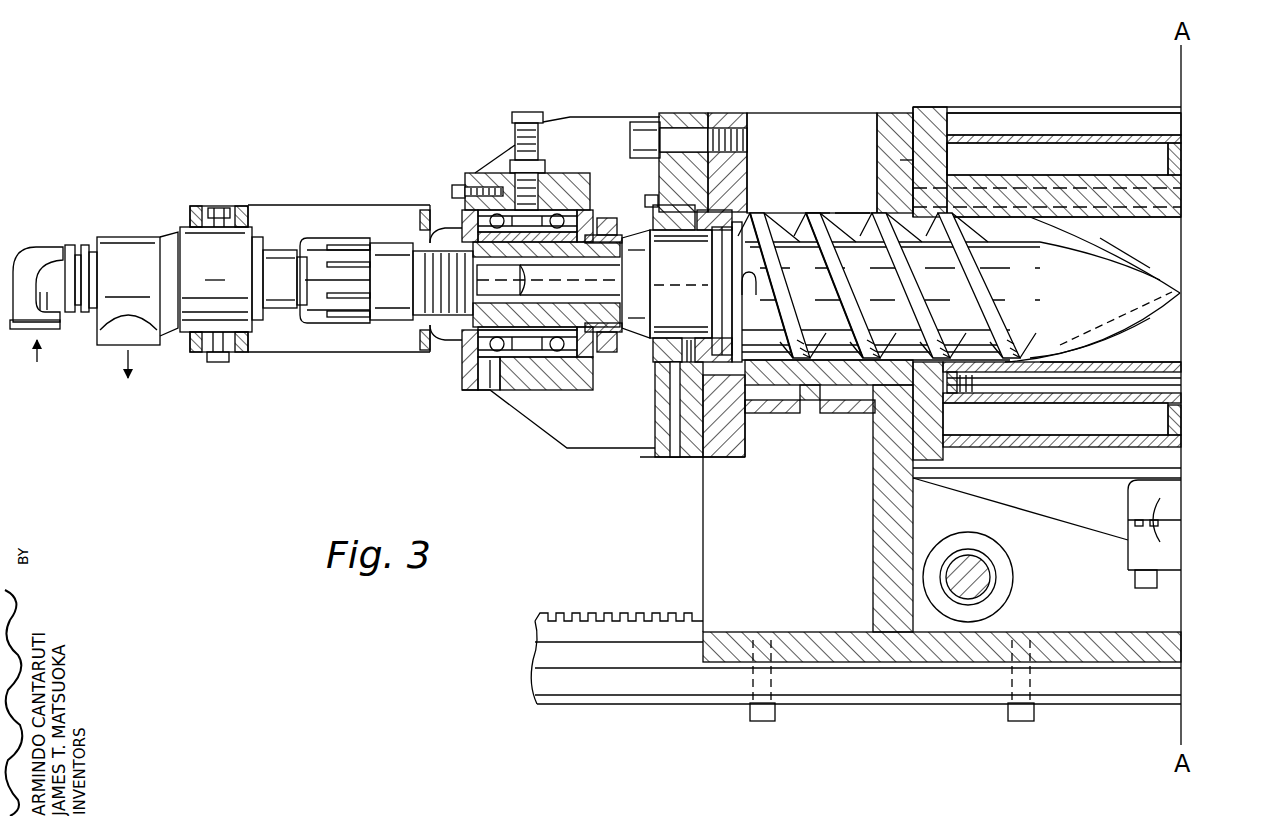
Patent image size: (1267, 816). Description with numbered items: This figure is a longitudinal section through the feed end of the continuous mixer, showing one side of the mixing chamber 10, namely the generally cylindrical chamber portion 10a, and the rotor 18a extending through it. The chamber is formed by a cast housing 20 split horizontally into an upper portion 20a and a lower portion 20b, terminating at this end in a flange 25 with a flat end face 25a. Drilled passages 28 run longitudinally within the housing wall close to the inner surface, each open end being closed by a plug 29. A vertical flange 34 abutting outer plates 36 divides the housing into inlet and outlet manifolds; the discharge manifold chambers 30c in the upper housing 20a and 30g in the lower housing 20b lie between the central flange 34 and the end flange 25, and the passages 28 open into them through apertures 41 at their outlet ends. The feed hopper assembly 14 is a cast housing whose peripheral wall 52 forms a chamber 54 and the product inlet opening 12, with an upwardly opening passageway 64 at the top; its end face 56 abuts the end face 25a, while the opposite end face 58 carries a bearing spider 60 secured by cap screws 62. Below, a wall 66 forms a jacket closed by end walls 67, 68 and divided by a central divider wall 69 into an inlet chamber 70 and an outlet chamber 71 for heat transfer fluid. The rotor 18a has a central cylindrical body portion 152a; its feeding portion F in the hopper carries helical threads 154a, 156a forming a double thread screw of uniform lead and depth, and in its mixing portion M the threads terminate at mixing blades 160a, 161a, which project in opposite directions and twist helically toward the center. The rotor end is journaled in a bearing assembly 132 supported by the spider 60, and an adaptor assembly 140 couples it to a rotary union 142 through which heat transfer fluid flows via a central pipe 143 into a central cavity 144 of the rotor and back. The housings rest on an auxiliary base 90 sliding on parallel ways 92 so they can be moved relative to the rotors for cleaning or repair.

The mixing chamber 10 is at (1163, 352).
The chamber portion 10a is at (1173, 230).
The product inlet opening 12 is at (843, 110).
The feed hopper housing 14 is at (740, 113).
The rotor 18a is at (1170, 248).
The cast housing 20 is at (1082, 165).
The upper housing portion 20a is at (1181, 180).
The lower housing portion 20b is at (1181, 396).
The end flange 25 is at (933, 125).
The flat end face 25a is at (912, 150).
The drilled passage 28 is at (1181, 203).
The plug 29 is at (948, 400).
The discharge manifold chamber 30c is at (1034, 168).
The discharge manifold chamber 30g is at (1080, 437).
The vertical flange 34 is at (1181, 160).
The outer plate 36 is at (1181, 138).
The aperture 41 is at (980, 400).
The peripheral wall 52 is at (828, 386).
The hopper chamber 54 is at (848, 215).
The end face 56 is at (905, 165).
The end face 58 is at (700, 113).
The bearing spider 60 is at (573, 128).
The cap screw 62 is at (643, 128).
The upwardly opening passageway 64 is at (878, 130).
The jacket wall 66 is at (785, 420).
The end wall 67 is at (732, 462).
The end wall 68 is at (873, 492).
The central divider wall 69 is at (812, 402).
The inlet chamber 70 is at (850, 402).
The outlet chamber 71 is at (767, 402).
The auxiliary base 90 is at (872, 662).
The ways 92 is at (662, 697).
The bearing assembly 132 is at (488, 170).
The adaptor assembly 140 is at (388, 230).
The rotary union 142 is at (137, 235).
The central pipe 143 is at (503, 277).
The central cavity 144 is at (520, 293).
The central body portion 152a is at (1171, 322).
The helical thread 154a is at (810, 280).
The helical thread 156a is at (875, 280).
The mixing blade 160a is at (1100, 250).
The mixing blade 161a is at (1068, 345).
The feeding portion F is at (812, 210).
The mixing portion M is at (1112, 242).